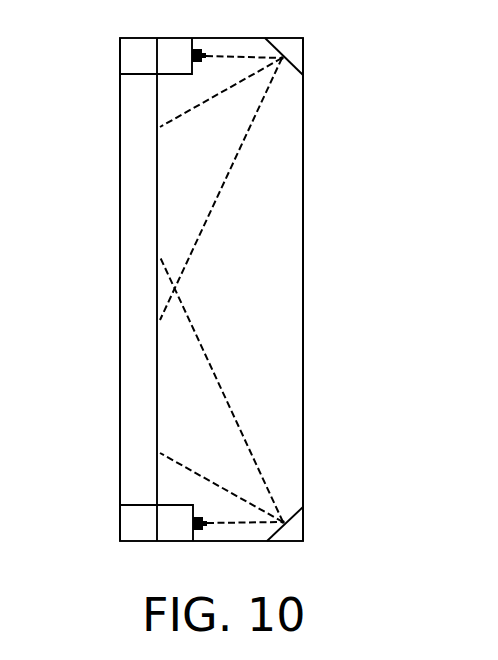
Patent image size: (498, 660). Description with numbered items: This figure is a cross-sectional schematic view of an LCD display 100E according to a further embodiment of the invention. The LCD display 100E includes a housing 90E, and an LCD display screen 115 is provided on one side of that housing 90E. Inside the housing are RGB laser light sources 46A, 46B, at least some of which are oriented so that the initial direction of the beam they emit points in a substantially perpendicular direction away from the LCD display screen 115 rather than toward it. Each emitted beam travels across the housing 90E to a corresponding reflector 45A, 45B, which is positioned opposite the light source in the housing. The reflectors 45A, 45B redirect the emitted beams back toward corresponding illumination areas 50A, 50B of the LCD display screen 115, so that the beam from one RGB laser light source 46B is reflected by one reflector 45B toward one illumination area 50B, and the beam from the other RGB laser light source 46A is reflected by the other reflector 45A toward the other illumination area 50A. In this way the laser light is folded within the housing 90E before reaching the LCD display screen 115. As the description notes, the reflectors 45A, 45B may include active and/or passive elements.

The LCD display 100E is at (340, 110).
The housing 90E is at (303, 179).
The LCD display screen 115 is at (120, 272).
The illumination area 50B is at (157, 200).
The illumination area 50A is at (157, 388).
The RGB laser light source 46B is at (173, 57).
The RGB laser light source 46A is at (175, 523).
The reflector 45B is at (293, 48).
The reflector 45A is at (293, 534).